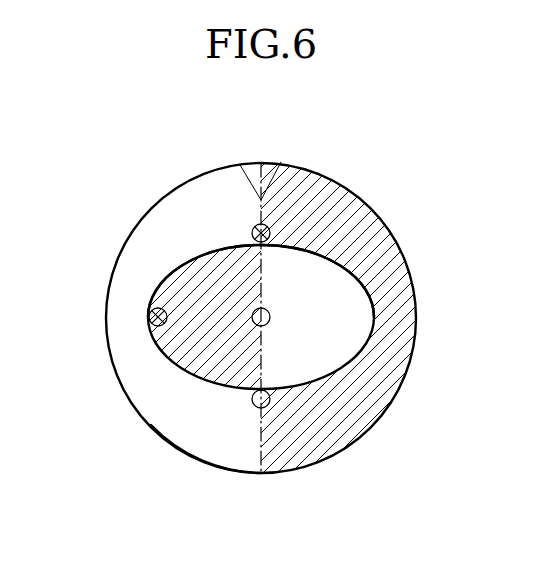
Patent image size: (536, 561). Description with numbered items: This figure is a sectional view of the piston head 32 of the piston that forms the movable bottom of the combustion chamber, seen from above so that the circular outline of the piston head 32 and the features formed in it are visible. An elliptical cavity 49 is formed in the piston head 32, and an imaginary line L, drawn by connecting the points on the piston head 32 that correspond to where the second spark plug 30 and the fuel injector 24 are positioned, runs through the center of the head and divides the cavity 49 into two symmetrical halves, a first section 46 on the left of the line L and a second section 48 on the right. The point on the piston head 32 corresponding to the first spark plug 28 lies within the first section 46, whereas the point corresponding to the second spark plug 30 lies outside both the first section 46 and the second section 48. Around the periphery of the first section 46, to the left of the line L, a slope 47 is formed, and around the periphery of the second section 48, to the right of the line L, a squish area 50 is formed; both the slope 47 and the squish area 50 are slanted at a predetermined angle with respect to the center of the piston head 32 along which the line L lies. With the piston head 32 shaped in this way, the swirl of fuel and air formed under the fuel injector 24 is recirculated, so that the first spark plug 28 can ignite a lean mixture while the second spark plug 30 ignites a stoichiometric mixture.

The fuel injector 24 is at (219, 225).
The first spark plug 28 is at (114, 299).
The second spark plug 30 is at (297, 172).
The piston head 32 is at (234, 318).
The first section 46 is at (243, 352).
The slope 47 is at (206, 468).
The second section 48 is at (322, 233).
The cavity 49 is at (189, 233).
The squish area 50 is at (268, 330).
The imaginary line L is at (250, 298).